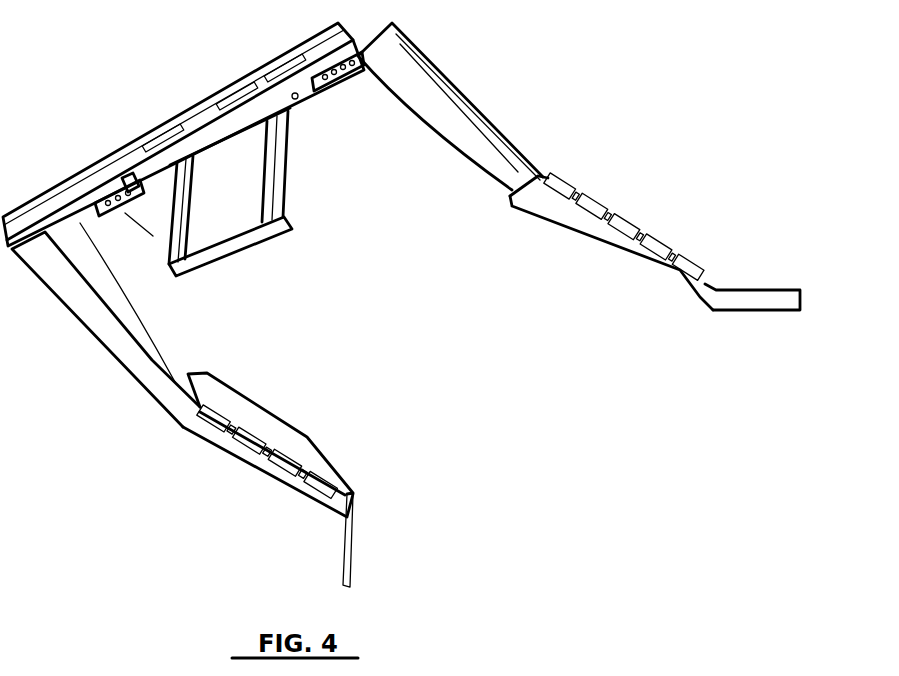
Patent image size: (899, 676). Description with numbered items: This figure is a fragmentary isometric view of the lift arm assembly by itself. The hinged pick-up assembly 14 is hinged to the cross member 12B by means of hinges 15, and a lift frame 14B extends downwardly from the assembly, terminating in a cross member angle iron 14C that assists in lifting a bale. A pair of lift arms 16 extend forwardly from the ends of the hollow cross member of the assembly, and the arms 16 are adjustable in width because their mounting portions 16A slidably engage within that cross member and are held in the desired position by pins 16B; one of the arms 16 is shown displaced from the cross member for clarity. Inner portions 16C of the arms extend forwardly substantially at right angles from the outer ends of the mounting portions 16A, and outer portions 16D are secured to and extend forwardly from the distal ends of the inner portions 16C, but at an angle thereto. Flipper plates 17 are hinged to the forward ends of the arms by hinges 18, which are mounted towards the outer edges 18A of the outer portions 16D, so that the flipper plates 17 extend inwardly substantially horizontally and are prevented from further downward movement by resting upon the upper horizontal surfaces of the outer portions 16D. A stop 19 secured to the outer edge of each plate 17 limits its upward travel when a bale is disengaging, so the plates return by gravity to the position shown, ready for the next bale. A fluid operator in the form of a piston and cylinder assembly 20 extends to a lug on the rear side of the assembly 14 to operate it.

The cross member 12B is at (120, 158).
The hinged pick-up assembly 14 is at (277, 100).
The lift frame 14B is at (285, 194).
The cross member angle iron 14C is at (231, 258).
The hinges 15 is at (177, 135).
The lift arms 16 is at (69, 311).
The mounting portions 16A is at (325, 88).
The pins 16B is at (147, 173).
The inner portions 16C is at (130, 323).
The outer portions 16D is at (327, 502).
The flipper plates 17 is at (313, 450).
The hinges 18 is at (200, 435).
The outer edges 18A is at (714, 289).
The stop 19 is at (240, 452).
The piston and cylinder assembly 20 is at (153, 236).